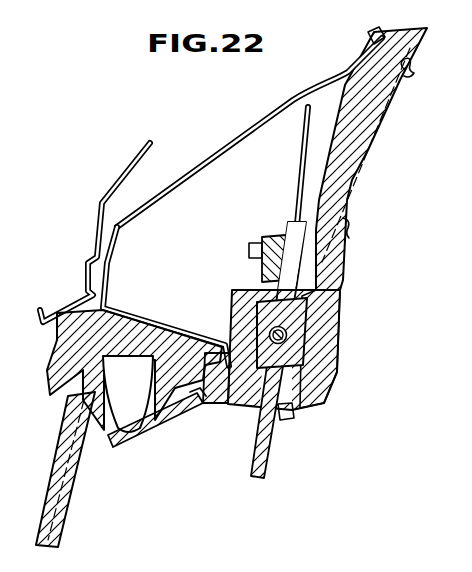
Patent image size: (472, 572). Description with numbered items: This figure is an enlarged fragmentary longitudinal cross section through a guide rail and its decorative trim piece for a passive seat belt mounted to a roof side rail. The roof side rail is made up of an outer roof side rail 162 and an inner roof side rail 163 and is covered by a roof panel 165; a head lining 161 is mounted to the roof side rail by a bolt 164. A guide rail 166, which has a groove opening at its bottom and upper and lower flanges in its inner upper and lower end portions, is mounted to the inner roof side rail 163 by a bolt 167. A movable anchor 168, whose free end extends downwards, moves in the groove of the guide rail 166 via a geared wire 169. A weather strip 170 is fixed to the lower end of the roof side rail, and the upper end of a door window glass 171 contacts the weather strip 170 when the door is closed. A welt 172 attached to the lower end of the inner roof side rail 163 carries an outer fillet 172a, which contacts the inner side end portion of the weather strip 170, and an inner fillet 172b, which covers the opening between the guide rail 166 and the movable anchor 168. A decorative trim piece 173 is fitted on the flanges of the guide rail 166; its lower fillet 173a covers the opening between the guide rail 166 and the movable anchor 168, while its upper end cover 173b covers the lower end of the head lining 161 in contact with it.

The head lining 161 is at (357, 165).
The outer roof side rail 162 is at (180, 188).
The inner roof side rail 163 is at (296, 171).
The bolt 164 is at (401, 77).
The roof panel 165 is at (141, 153).
The guide rail 166 is at (336, 313).
The bolt 167 is at (341, 257).
The movable anchor 168 is at (267, 473).
The geared wire 169 is at (309, 336).
The weather strip 170 is at (67, 389).
The door window glass 171 is at (79, 496).
The welt 172 is at (203, 430).
The outer fillet 172a is at (188, 419).
The inner fillet 172b is at (244, 408).
The decorative trim piece 173 is at (323, 388).
The fillet 173a is at (279, 408).
The upper end cover 173b is at (346, 228).